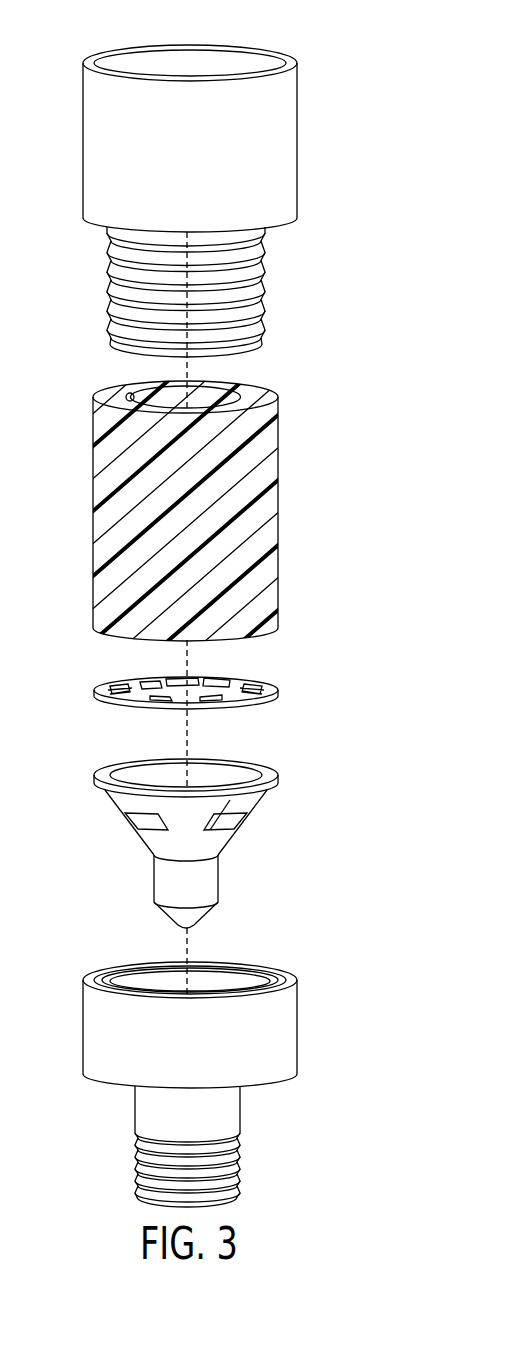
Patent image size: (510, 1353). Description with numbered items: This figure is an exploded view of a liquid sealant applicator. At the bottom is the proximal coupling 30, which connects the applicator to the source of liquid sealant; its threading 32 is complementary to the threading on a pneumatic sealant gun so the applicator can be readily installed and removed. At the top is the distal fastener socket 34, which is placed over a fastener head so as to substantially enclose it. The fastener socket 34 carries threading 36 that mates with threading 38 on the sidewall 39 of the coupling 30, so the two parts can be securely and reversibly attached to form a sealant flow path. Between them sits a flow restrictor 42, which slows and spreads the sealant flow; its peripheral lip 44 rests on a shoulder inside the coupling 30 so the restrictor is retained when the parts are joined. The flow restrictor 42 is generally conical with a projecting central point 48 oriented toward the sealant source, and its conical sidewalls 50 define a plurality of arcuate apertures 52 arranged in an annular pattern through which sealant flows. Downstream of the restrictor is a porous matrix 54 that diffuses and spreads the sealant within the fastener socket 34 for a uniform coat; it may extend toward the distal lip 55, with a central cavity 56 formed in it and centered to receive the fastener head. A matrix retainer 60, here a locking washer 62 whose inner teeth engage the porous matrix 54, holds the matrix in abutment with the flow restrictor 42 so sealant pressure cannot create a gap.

The proximal coupling 30 is at (297, 990).
The threading 32 is at (240, 1160).
The distal fastener socket 34 is at (297, 128).
The threading 36 is at (265, 262).
The threading 38 is at (240, 982).
The sidewall 39 is at (318, 1030).
The flow restrictor 42 is at (150, 850).
The peripheral lip 44 is at (278, 777).
The central point 48 is at (172, 922).
The conical sidewalls 50 is at (227, 842).
The apertures 52 is at (130, 812).
The porous matrix 54 is at (278, 485).
The distal lip 55 is at (280, 51).
The central cavity 56 is at (128, 394).
The matrix retainer 60 is at (308, 681).
The locking washer 62 is at (102, 686).